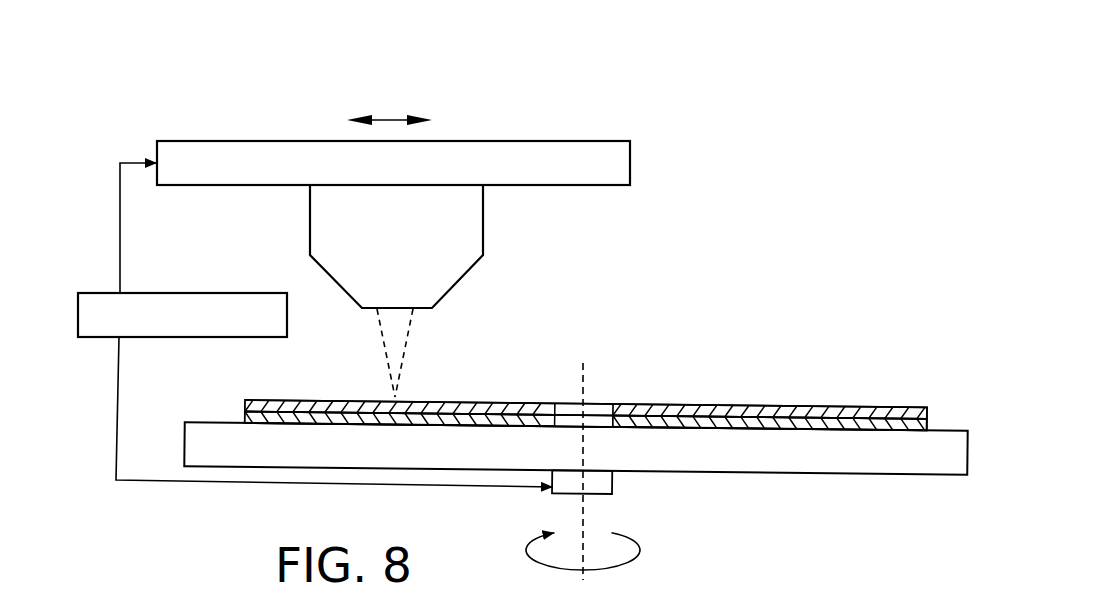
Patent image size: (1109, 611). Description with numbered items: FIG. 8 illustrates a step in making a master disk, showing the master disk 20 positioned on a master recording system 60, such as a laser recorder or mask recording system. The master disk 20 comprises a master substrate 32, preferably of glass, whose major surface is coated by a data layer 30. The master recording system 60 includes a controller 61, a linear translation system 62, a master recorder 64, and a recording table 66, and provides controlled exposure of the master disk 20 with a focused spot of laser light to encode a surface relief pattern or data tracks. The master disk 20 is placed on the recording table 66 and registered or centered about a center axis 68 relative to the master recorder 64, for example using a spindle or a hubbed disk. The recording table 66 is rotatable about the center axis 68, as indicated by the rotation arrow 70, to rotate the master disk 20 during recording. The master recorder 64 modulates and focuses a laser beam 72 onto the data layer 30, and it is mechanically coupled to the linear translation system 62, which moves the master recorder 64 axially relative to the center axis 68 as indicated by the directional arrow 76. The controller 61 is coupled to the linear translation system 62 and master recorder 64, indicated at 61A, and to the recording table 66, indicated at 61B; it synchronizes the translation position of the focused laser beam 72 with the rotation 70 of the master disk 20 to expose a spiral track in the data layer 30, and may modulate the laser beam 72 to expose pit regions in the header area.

The master disk 20 is at (820, 400).
The data layer 30 is at (897, 400).
The master substrate 32 is at (926, 420).
The master recording system 60 is at (203, 60).
The controller 61 is at (100, 293).
The controller coupling to linear translation system and master recorder 61A is at (119, 186).
The controller coupling to recording table 61B is at (153, 481).
The linear translation system 62 is at (630, 166).
The master recorder 64 is at (483, 222).
The recording table 66 is at (972, 466).
The center axis 68 is at (582, 490).
The rotation arrow 70 is at (530, 553).
The laser beam 72 is at (408, 347).
The directional arrow 76 is at (388, 119).